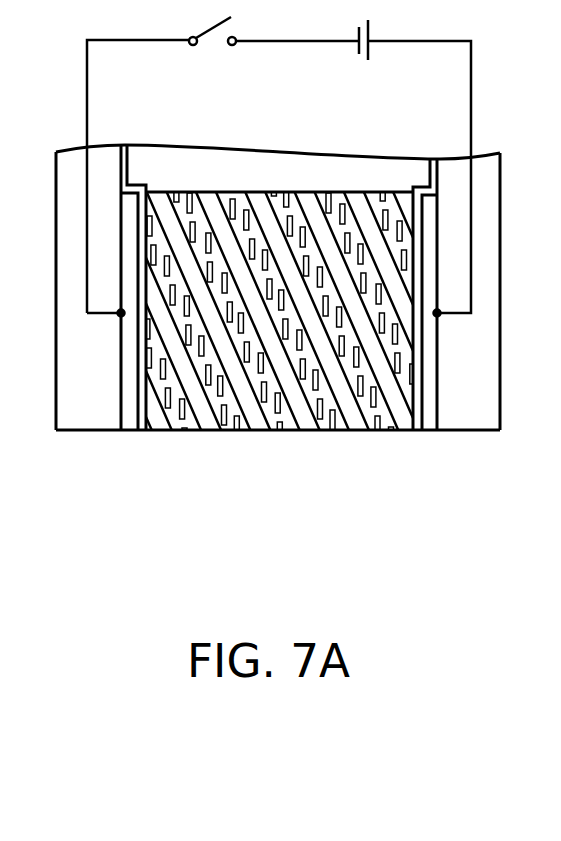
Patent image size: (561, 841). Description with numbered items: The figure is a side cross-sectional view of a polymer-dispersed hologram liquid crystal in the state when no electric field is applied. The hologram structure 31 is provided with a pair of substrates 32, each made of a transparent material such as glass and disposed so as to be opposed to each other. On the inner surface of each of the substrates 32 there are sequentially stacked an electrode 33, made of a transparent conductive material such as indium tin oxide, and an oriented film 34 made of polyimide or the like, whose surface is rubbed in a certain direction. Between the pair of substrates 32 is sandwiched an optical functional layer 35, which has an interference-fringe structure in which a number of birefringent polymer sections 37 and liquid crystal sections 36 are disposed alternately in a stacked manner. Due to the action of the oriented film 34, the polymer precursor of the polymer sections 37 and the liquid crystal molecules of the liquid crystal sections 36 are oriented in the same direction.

The hologram structure 31 is at (113, 507).
The substrate 32 is at (90, 431).
The electrode 33 is at (130, 431).
The oriented film 34 is at (142, 431).
The optical functional layer 35 is at (293, 181).
The liquid crystal section 36 is at (270, 397).
The polymer section 37 is at (307, 431).